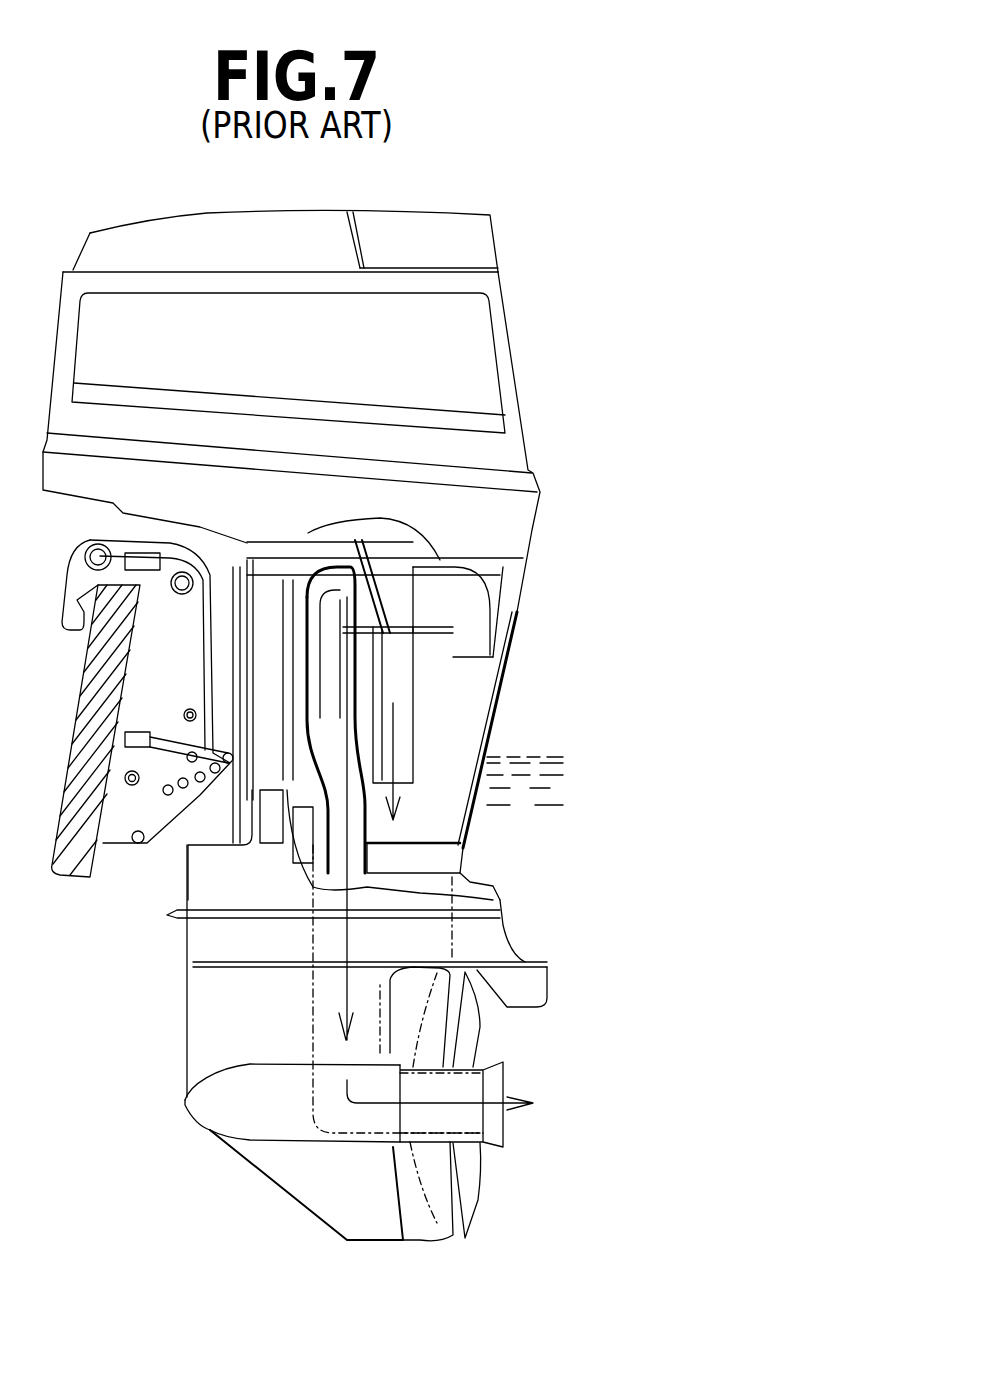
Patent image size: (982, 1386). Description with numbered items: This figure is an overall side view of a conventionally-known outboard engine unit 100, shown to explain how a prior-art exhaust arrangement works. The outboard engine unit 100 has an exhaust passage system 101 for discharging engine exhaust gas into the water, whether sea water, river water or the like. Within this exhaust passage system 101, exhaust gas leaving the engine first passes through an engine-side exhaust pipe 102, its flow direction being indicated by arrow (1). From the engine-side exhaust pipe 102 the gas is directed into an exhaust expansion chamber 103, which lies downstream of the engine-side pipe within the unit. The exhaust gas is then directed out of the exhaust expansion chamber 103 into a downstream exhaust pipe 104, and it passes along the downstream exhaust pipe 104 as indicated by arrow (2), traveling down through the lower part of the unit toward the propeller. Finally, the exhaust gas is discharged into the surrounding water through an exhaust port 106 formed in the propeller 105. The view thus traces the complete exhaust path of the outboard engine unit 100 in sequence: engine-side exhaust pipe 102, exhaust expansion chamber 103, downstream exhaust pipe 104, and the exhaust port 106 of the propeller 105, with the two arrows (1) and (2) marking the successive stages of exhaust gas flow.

The outboard engine unit 100 is at (631, 205).
The exhaust passage system 101 is at (637, 630).
The engine-side exhaust pipe 102 is at (410, 686).
The exhaust expansion chamber 103 is at (490, 680).
The downstream exhaust pipe 104 is at (350, 792).
The propeller 105 is at (487, 1193).
The exhaust port 106 is at (503, 1127).
The arrow 1 is at (400, 790).
The arrow 2 is at (345, 990).